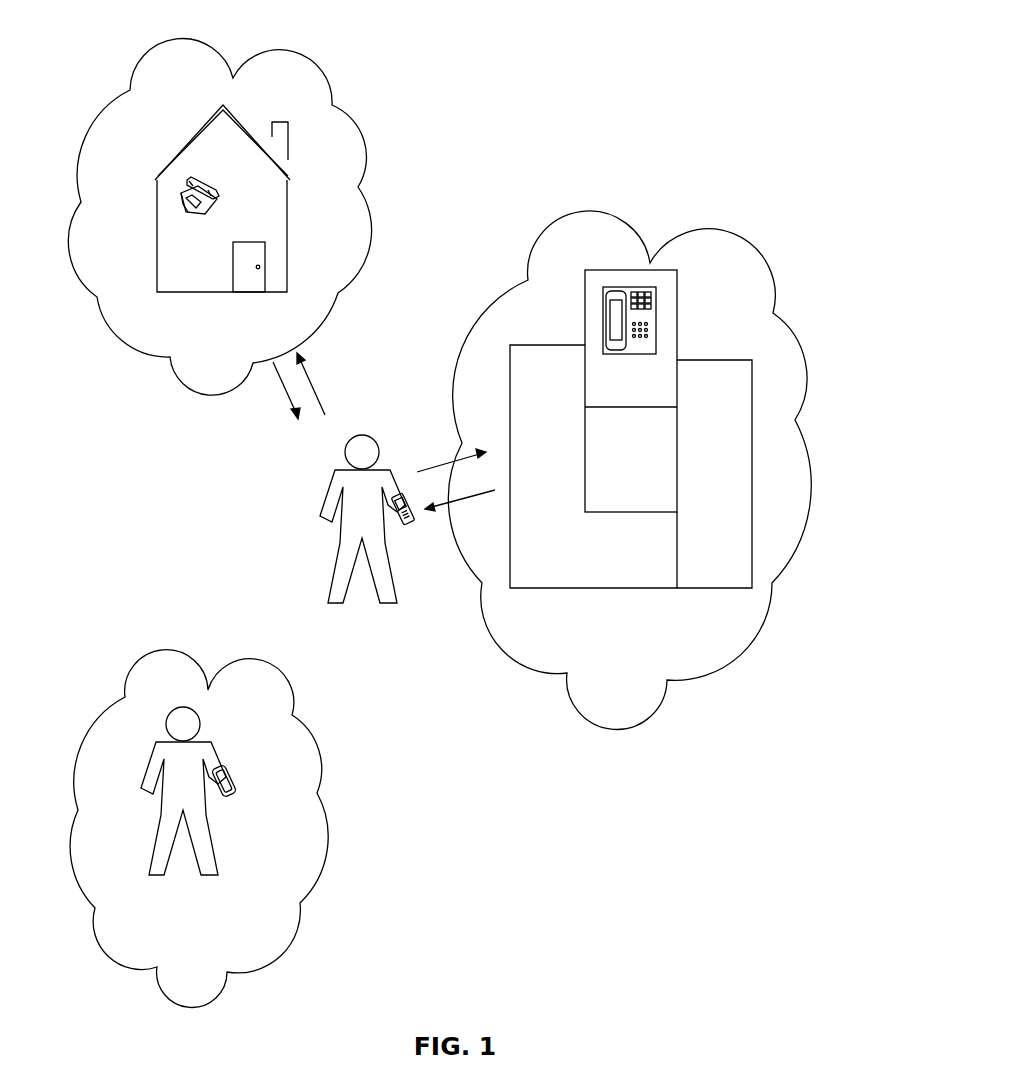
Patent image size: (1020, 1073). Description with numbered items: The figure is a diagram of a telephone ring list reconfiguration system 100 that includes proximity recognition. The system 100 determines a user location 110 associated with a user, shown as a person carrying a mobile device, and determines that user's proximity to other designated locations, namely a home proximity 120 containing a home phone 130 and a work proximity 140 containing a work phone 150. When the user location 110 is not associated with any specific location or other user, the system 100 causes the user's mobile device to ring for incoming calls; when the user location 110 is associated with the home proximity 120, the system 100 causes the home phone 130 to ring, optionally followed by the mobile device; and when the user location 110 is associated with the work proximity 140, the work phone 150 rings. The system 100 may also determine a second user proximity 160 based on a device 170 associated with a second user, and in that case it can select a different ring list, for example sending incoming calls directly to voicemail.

The telephone ring list reconfiguration system 100 is at (439, 508).
The user location 110 is at (405, 638).
The home proximity 120 is at (219, 217).
The home phone 130 is at (195, 180).
The work proximity 140 is at (629, 457).
The work phone 150 is at (657, 332).
The second user proximity 160 is at (224, 829).
The second user's mobile device 170 is at (230, 792).